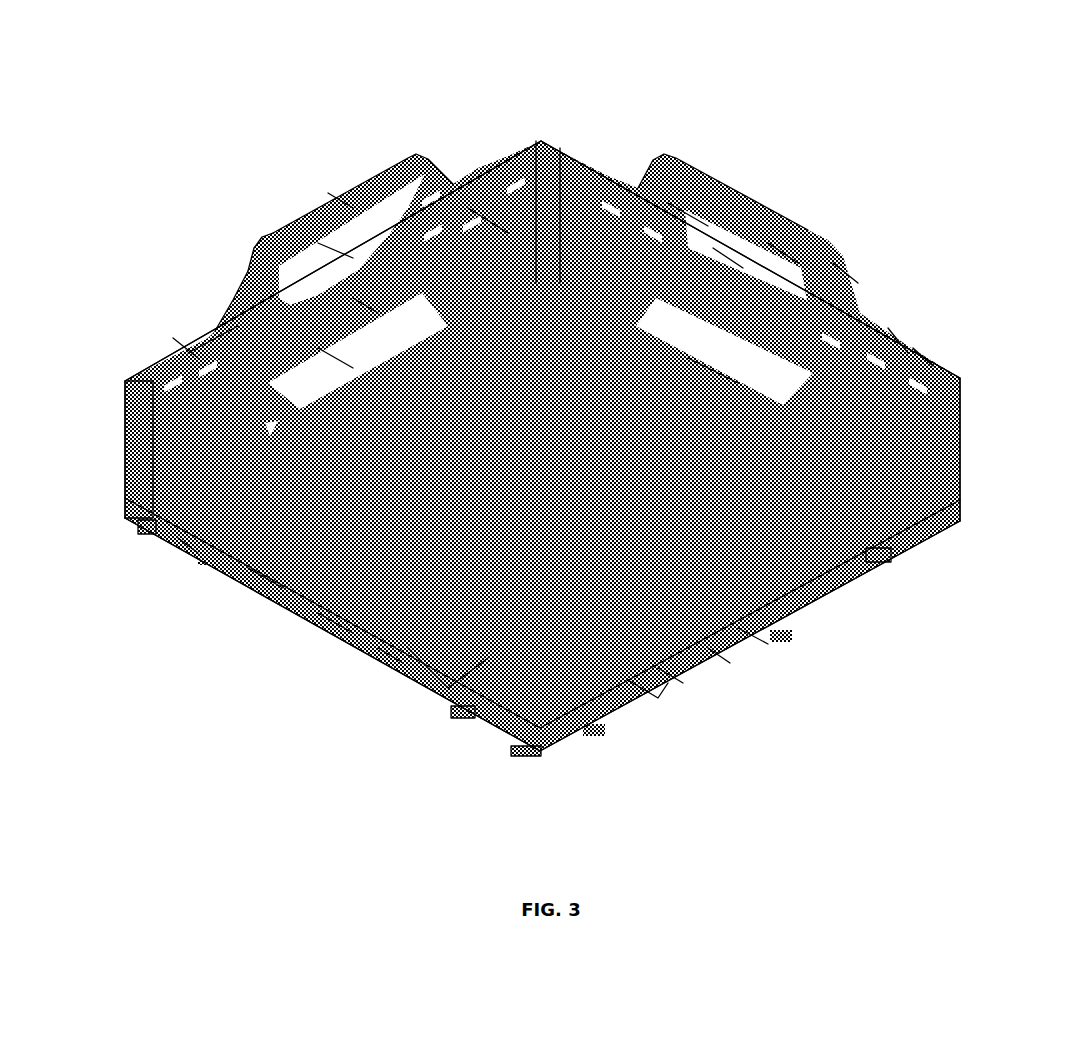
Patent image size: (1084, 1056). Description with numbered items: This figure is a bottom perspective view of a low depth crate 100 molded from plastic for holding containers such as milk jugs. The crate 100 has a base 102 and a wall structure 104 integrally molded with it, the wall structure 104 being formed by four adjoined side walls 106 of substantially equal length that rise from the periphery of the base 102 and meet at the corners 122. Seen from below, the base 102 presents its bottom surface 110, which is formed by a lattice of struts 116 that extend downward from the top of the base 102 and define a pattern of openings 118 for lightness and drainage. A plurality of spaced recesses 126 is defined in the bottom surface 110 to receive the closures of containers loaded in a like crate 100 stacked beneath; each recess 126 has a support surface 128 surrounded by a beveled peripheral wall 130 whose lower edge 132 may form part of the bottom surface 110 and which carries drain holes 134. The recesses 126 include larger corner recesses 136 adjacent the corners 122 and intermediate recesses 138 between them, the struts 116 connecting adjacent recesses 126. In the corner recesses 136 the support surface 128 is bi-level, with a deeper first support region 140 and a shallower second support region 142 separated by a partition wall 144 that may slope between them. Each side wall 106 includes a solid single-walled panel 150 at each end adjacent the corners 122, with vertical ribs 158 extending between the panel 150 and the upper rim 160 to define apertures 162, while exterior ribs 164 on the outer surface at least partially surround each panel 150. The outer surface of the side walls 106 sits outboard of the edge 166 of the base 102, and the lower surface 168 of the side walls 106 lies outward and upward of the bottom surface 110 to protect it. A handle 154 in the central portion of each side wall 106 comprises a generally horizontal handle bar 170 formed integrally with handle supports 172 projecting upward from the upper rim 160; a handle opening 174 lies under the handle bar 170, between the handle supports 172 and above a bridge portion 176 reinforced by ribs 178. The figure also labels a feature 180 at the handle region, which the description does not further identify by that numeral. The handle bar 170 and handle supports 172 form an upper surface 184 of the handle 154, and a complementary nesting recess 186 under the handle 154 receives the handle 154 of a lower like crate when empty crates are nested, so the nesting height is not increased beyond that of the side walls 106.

The low depth crate 100 is at (280, 90).
The base 102 is at (270, 615).
The wall structure 104 is at (132, 335).
The side wall 106 is at (572, 143).
The bottom surface 110 is at (415, 665).
The struts 116 is at (636, 680).
The openings 118 is at (662, 668).
The corners 122 is at (132, 513).
The recesses 126 is at (745, 628).
The support surface 128 is at (828, 556).
The peripheral wall 130 is at (257, 572).
The lower edge 132 is at (327, 617).
The drain holes 134 is at (508, 727).
The corner recesses 136 is at (582, 210).
The intermediate recesses 138 is at (702, 360).
The first support region 140 is at (677, 205).
The second support region 142 is at (200, 357).
The partition wall 144 is at (470, 703).
The panel 150 is at (478, 215).
The handle 154 is at (262, 202).
The vertical ribs 158 is at (890, 333).
The upper rim 160 is at (177, 350).
The apertures 162 is at (913, 350).
The exterior ribs 164 is at (127, 447).
The edge 166 is at (838, 263).
The lower surface 168 is at (178, 537).
The handle bar 170 is at (333, 190).
The handle supports 172 is at (233, 260).
The handle opening 174 is at (328, 240).
The bridge portion 176 is at (778, 240).
The ribs 178 is at (722, 248).
The handle leg 180 is at (258, 227).
The upper surface 184 is at (694, 153).
The nesting recess 186 is at (328, 350).